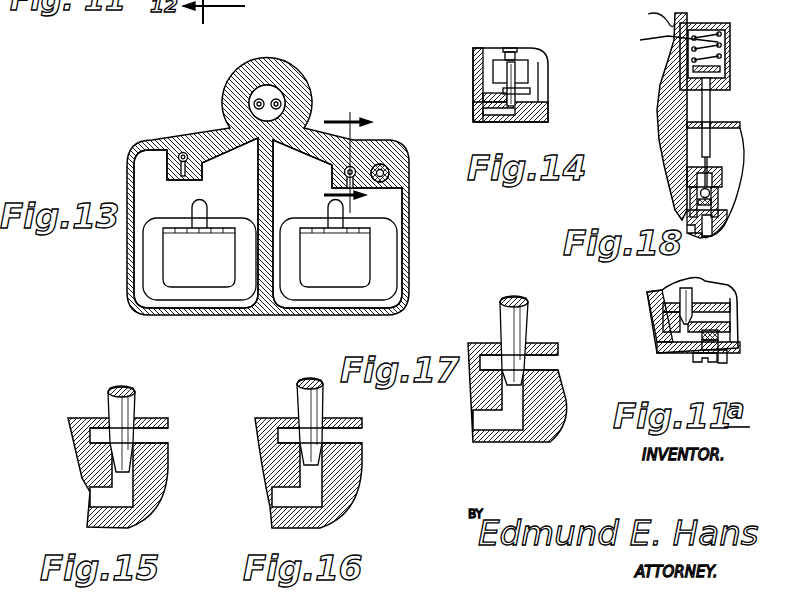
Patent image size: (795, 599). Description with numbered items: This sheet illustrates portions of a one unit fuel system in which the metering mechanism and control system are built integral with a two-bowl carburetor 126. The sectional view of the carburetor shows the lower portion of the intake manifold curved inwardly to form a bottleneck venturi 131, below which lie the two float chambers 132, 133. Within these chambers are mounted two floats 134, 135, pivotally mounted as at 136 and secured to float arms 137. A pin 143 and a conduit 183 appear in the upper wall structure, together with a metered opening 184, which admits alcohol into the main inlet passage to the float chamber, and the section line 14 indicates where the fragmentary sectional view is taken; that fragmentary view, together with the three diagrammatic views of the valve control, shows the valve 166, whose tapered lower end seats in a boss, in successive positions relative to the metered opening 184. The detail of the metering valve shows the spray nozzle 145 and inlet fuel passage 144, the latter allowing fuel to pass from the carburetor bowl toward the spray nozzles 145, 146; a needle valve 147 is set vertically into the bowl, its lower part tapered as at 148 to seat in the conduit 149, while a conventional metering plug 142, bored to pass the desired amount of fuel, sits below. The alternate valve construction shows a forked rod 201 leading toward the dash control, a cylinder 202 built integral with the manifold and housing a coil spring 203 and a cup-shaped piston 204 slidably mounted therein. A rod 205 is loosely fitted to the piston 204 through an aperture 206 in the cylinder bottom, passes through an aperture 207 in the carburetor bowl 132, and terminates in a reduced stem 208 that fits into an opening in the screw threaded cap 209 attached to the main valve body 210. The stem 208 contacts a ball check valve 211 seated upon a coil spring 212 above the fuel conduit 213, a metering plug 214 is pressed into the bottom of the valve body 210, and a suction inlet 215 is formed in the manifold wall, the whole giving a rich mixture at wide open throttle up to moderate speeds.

In FIG. 13, the two-bowl carburetor 126 is at (242, 314).
In FIG. 13, the bottleneck venturi 131 is at (270, 90).
In FIG. 13, the float chamber 132 is at (196, 223).
In FIG. 18, the float chamber 132 is at (688, 146).
In FIG. 13, the float chamber 133 is at (337, 224).
In FIG. 13, the float 134 is at (167, 292).
In FIG. 13, the float 135 is at (302, 286).
In FIG. 13, the float pivot 136 is at (224, 228).
In FIG. 13, the float arm 137 is at (409, 245).
In FIG. 13, the inlet fuel passage 143 is at (184, 178).
In FIG. 11A, the inlet fuel passage 143 is at (726, 357).
In FIG. 13, the spray nozzle 145 is at (252, 101).
In FIG. 11A, the spray nozzle 145 is at (651, 318).
In FIG. 13, the spray nozzle 146 is at (283, 104).
In FIG. 13, the conduit 183 is at (385, 166).
In FIG. 13, the metered opening 184 is at (346, 186).
In FIG. 14, the metered opening 184 is at (518, 98).
In FIG. 17, the metered opening 184 is at (545, 364).
In FIG. 15, the metered opening 184 is at (160, 434).
In FIG. 16, the metered opening 184 is at (346, 439).
In FIG. 13, the section line 14— 14 is at (363, 162).
In FIG. 14, the valve 166 is at (516, 80).
In FIG. 17, the valve 166 is at (516, 324).
In FIG. 15, the valve 166 is at (126, 406).
In FIG. 16, the valve 166 is at (314, 407).
In FIG. 18, the forked rod 201 is at (730, 25).
In FIG. 18, the cylinder 202 is at (730, 36).
In FIG. 18, the coil spring 203 is at (721, 52).
In FIG. 18, the cup-shaped piston 204 is at (722, 70).
In FIG. 18, the rod 205 is at (711, 112).
In FIG. 18, the aperture 206 is at (728, 90).
In FIG. 18, the aperture 207 is at (738, 128).
In FIG. 18, the reduced stem 208 is at (723, 166).
In FIG. 18, the screw threaded cap 209 is at (723, 172).
In FIG. 18, the main valve body 210 is at (712, 193).
In FIG. 18, the ball check valve 211 is at (700, 191).
In FIG. 18, the coil spring 212 is at (715, 204).
In FIG. 18, the fuel conduit 213 is at (700, 237).
In FIG. 18, the metering plug 214 is at (726, 224).
In FIG. 18, the suction inlet 215 is at (664, 44).
In FIG. 11A, the metering plug 142 is at (710, 359).
In FIG. 11A, the inlet fuel passage 144 is at (726, 316).
In FIG. 11A, the needle valve 147 is at (691, 290).
In FIG. 11A, the tapered portion 148 is at (692, 302).
In FIG. 11A, the conduit 149 is at (672, 330).